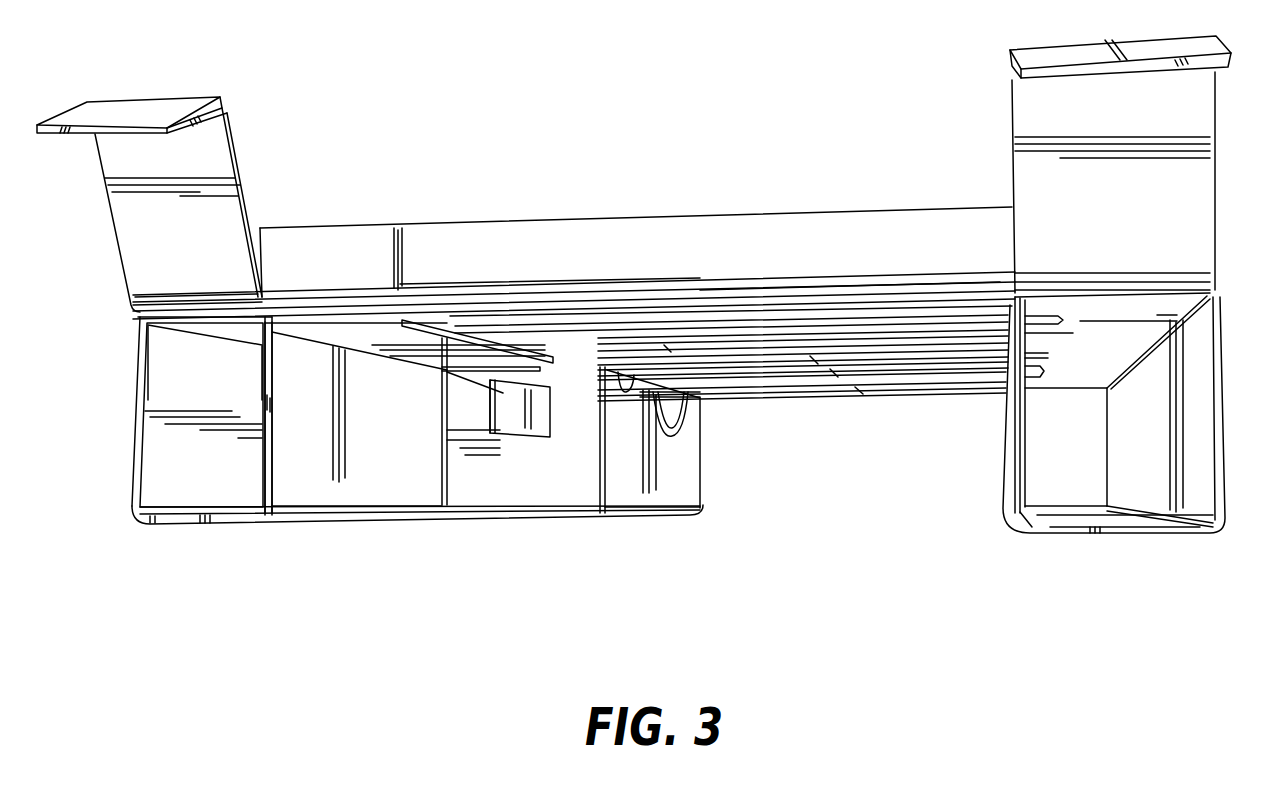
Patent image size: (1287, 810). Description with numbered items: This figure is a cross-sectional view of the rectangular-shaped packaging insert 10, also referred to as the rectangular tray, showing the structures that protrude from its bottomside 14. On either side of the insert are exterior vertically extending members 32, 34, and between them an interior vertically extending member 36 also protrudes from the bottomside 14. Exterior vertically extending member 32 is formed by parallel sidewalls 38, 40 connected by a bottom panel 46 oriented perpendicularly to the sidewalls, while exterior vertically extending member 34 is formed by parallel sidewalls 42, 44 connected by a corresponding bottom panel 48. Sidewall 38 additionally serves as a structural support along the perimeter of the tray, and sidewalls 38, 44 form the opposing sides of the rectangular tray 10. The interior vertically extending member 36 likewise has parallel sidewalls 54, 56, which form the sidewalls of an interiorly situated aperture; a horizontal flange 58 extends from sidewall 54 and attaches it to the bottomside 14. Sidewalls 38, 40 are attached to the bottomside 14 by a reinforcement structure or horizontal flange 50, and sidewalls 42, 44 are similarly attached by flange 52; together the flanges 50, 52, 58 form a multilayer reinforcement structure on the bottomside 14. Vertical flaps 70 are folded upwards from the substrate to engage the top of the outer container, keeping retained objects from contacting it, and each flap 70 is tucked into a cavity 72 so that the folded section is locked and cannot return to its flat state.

The packaging insert 10 is at (693, 137).
The bottomside 14 is at (773, 547).
The exterior vertically extending member 32 is at (185, 518).
The exterior vertically extending member 34 is at (1087, 533).
The interior vertically extending member 36 is at (578, 518).
The sidewall 38 is at (138, 435).
The sidewall 40 is at (268, 457).
The sidewall 42 is at (1010, 428).
The sidewall 44 is at (1220, 435).
The bottom panel 46 is at (223, 525).
The bottom panel 48 is at (1145, 535).
The horizontal flange 50 is at (428, 343).
The flange 52 is at (526, 364).
The sidewall 54 is at (702, 450).
The sidewall 56 is at (508, 465).
The horizontal flange 58 is at (715, 402).
The vertical flap 70 is at (153, 125).
The cavity 72 is at (165, 402).